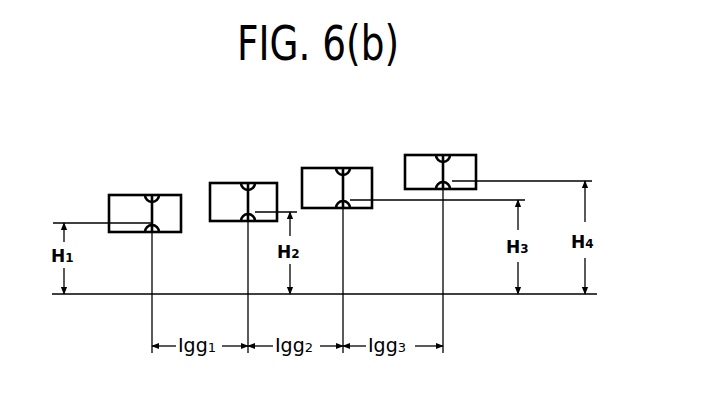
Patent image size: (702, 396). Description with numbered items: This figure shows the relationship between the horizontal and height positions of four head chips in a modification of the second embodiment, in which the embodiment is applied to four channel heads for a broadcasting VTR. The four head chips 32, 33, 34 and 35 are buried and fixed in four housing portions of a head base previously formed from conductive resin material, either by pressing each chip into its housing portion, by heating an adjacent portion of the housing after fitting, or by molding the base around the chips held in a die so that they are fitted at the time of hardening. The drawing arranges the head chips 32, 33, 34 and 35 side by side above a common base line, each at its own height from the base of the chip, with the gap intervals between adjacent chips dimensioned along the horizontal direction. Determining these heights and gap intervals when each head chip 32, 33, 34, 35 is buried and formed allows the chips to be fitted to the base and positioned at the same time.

The head chip 32 is at (127, 206).
The head chip 33 is at (225, 197).
The head chip 34 is at (322, 181).
The head chip 35 is at (423, 164).